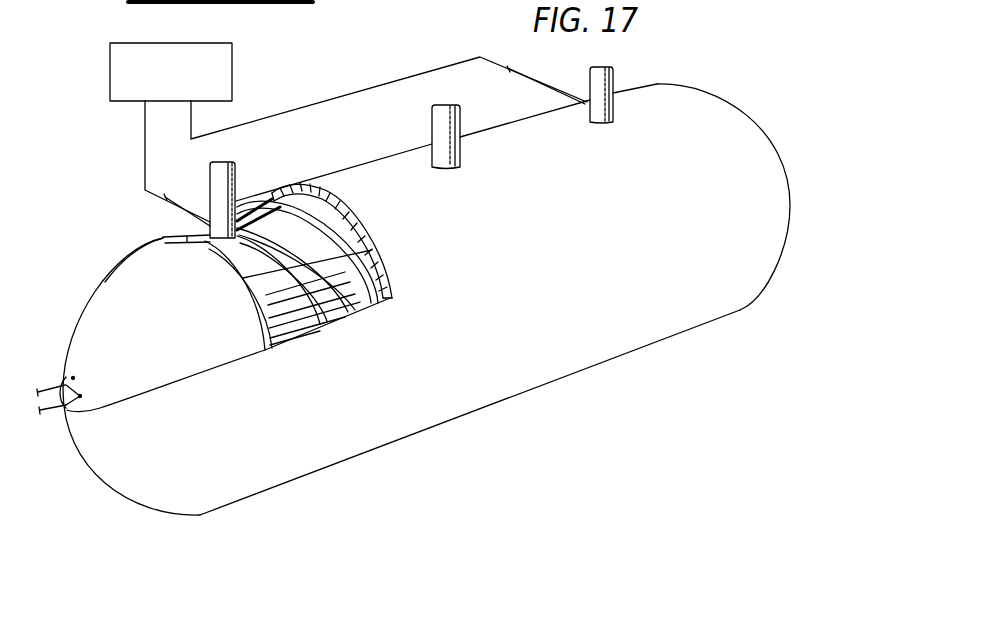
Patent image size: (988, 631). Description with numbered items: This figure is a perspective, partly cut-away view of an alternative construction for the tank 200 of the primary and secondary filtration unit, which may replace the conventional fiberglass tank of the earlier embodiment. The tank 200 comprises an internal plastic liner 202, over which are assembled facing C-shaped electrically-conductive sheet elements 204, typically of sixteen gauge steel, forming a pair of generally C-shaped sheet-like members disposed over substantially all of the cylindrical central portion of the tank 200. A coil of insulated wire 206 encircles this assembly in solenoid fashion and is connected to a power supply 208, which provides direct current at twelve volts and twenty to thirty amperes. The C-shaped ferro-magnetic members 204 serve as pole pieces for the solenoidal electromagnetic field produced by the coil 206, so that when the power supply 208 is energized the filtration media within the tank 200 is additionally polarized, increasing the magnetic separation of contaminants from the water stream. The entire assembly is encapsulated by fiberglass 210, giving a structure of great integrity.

The tank 200 is at (713, 344).
The internal plastic liner 202 is at (117, 288).
The C-shaped electrically-conductive sheet elements 204 is at (240, 277).
The coil of insulated wire 206 is at (363, 232).
The power supply 208 is at (232, 62).
The fiberglass encapsulation 210 is at (658, 97).